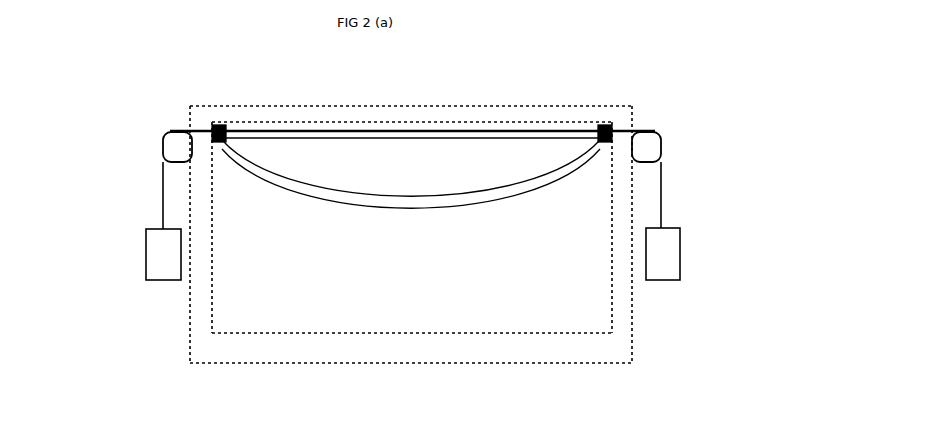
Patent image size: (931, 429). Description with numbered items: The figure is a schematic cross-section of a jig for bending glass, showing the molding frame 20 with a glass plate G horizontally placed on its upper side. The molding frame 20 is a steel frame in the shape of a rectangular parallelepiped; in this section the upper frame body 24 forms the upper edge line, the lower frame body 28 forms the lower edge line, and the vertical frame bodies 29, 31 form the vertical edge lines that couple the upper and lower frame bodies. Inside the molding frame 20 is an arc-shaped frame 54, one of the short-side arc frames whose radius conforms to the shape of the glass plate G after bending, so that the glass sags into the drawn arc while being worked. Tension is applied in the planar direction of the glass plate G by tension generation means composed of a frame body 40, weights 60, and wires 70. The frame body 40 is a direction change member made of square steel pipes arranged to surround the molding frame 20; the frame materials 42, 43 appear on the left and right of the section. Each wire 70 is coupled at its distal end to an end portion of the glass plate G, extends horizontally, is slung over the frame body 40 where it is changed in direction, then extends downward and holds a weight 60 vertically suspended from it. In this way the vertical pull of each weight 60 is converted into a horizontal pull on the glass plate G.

The molding frame 20 is at (415, 209).
The upper frame body 24 is at (515, 107).
The lower frame body 28 is at (486, 331).
The vertical frame body 29 is at (633, 298).
The vertical frame body 31 is at (200, 303).
The glass plate G is at (546, 130).
The arc-shaped frame 54 is at (502, 200).
The frame body 40 is at (415, 151).
The frame material 42 is at (170, 147).
The frame material 43 is at (650, 148).
The wire 70 is at (160, 208).
The weight 60 is at (155, 262).